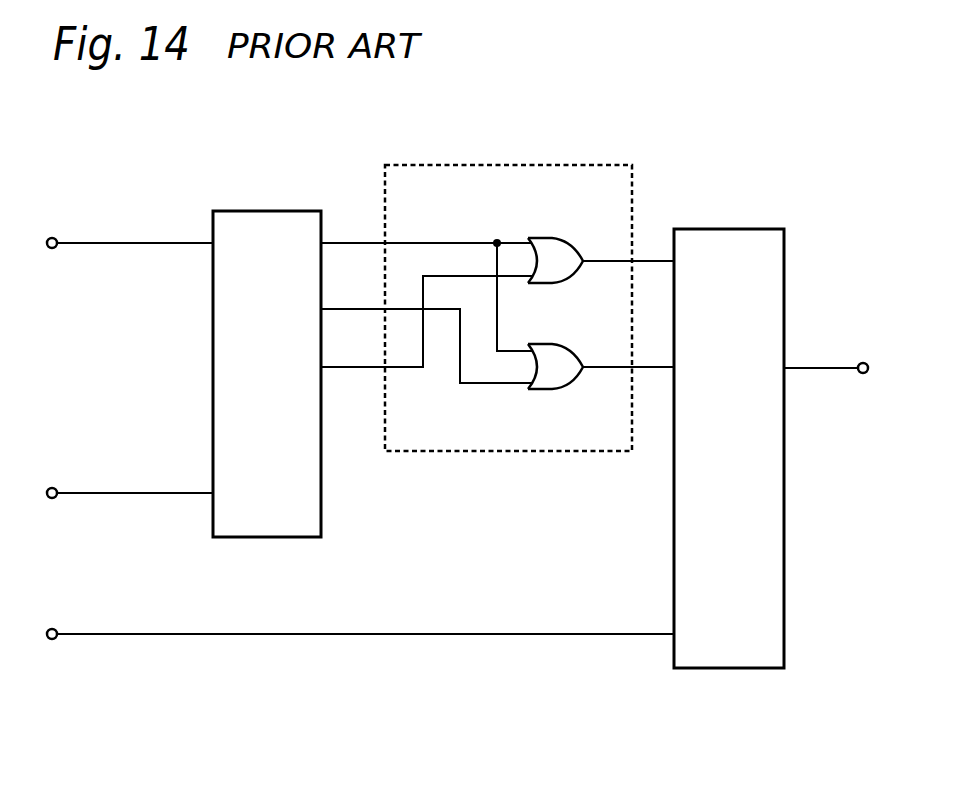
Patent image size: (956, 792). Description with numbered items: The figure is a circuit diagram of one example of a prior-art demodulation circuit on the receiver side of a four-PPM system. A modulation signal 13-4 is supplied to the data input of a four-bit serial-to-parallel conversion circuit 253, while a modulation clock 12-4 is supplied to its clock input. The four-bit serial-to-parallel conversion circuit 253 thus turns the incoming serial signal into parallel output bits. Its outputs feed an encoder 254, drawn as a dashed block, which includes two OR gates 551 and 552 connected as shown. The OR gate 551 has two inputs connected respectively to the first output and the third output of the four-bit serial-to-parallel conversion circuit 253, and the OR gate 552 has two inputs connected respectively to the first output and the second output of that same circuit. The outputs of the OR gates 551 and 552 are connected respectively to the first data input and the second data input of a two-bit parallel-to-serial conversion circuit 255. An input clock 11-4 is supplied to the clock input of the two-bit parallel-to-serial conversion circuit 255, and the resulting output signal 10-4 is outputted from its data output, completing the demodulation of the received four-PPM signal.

The modulation signal 13-4 is at (132, 242).
The modulation clock 12-4 is at (130, 492).
The input clock 11-4 is at (130, 633).
The output signal 10-4 is at (826, 367).
The four-bit serial-to-parallel conversion circuit 253 is at (282, 211).
The encoder 254 is at (497, 279).
The two-bit parallel-to-serial conversion circuit 255 is at (738, 229).
The OR gate 551 is at (543, 238).
The OR gate 552 is at (543, 344).